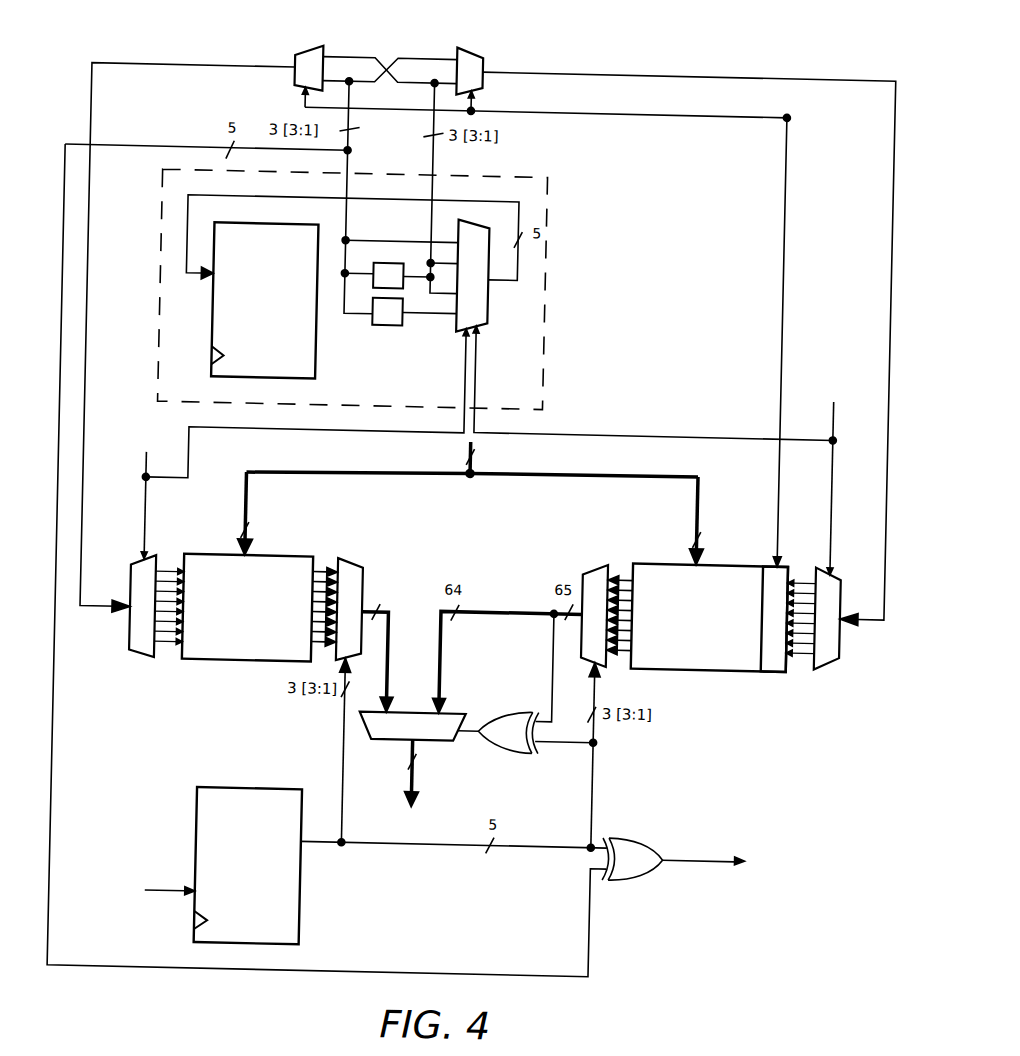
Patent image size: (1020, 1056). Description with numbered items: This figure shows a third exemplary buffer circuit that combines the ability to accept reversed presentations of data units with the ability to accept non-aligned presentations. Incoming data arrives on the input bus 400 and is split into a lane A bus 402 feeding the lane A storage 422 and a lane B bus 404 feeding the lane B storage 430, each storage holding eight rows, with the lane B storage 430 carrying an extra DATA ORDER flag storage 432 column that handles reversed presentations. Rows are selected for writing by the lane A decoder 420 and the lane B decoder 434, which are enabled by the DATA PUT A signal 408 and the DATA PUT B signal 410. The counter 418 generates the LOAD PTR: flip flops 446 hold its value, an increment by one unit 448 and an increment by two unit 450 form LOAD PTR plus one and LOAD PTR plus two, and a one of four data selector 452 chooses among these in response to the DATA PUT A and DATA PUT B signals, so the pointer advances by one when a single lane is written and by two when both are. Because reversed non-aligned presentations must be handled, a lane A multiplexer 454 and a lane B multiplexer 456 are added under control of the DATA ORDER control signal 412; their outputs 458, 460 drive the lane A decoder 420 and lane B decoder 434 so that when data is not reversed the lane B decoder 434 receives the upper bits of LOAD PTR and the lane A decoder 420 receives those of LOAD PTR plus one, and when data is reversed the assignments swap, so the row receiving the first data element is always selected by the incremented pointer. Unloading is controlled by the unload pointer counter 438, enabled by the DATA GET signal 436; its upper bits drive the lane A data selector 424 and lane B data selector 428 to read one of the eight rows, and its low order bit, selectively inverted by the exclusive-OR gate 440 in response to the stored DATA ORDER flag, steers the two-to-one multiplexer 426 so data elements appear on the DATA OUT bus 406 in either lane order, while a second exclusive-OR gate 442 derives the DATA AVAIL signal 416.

The data input bus 400 is at (471, 468).
The lane A data bus 402 is at (243, 525).
The lane B data bus 404 is at (697, 523).
The data output bus 406 is at (421, 778).
The data put A signal 408 is at (144, 462).
The data put B signal 410 is at (833, 402).
The DATA ORDER control signal 412 is at (789, 113).
The data available signal 416 is at (708, 857).
The counter 418 is at (153, 336).
The lane A decoder 420 is at (148, 664).
The lane A storage 422 is at (255, 665).
The lane A read multiplexer 424 is at (345, 562).
The output multiplexer 426 is at (457, 712).
The lane B read multiplexer 428 is at (600, 565).
The lane B storage 430 is at (702, 665).
The DATA ORDER flag storage 432 is at (774, 665).
The lane B decoder 434 is at (830, 664).
The data get signal 436 is at (175, 895).
The unload pointer register 438 is at (308, 897).
The exclusive-OR gate 440 is at (515, 756).
The exclusive-OR gate 442 is at (634, 877).
The load pointer register 446 is at (313, 351).
The increment by one adder 448 is at (385, 264).
The increment by two adder 450 is at (383, 329).
The load pointer multiplexer 452 is at (483, 304).
The lane A multiplexer 454 is at (293, 53).
The lane B multiplexer 456 is at (465, 53).
The lane A address line 458 is at (230, 67).
The lane B address line 460 is at (530, 70).